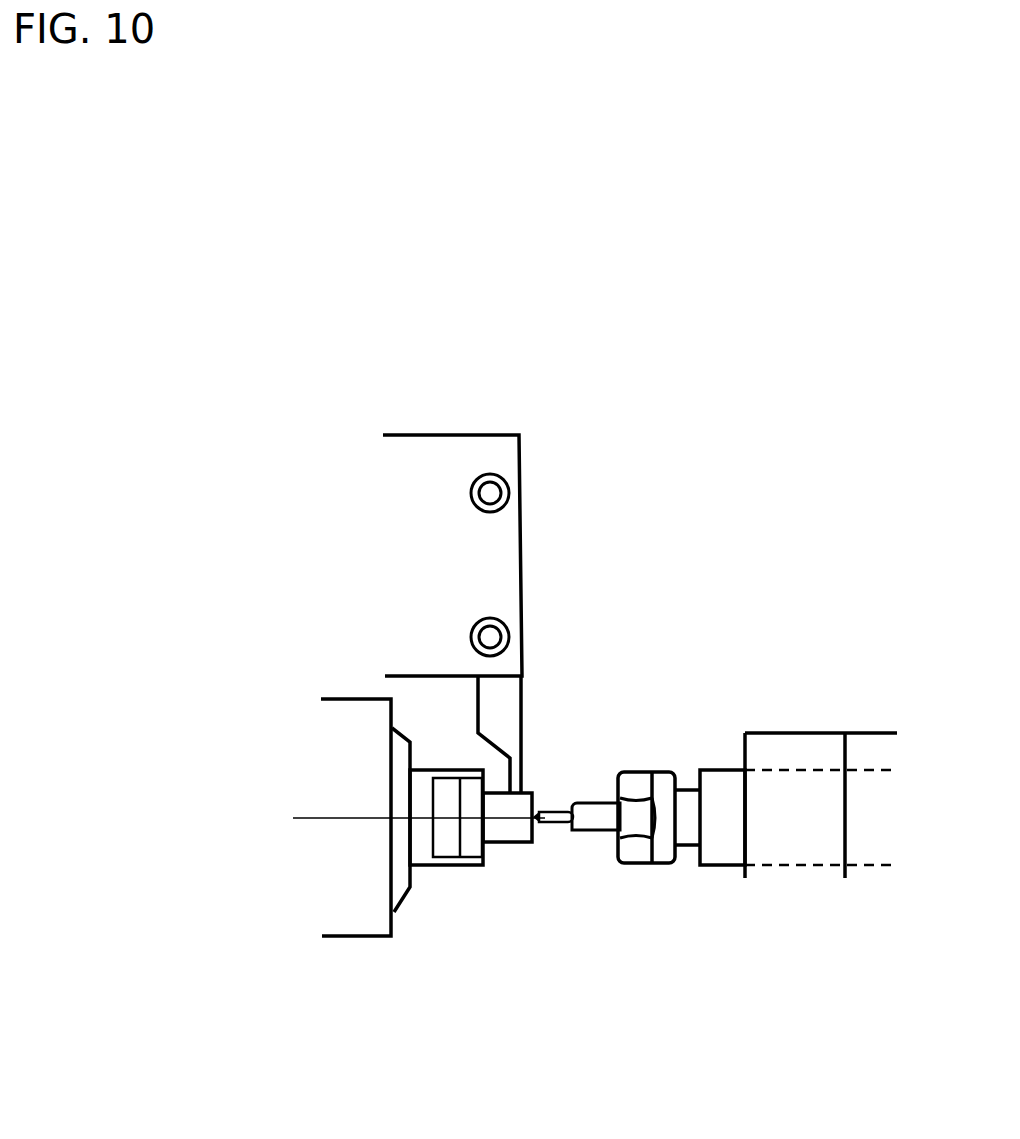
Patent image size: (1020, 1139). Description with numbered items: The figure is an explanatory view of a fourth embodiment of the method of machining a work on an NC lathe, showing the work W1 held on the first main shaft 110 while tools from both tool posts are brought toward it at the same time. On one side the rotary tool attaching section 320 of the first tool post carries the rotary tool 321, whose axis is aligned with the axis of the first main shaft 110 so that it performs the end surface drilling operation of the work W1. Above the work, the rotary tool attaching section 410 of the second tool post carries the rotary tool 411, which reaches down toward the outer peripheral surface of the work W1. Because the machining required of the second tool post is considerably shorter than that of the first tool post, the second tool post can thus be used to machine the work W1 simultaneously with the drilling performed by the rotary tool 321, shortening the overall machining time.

The first main shaft 110 is at (332, 670).
The work W1 is at (457, 890).
The rotary tool attaching section 410 is at (470, 415).
The rotary tool 411 is at (512, 714).
The rotary tool 321 is at (653, 863).
The rotary tool attaching section 320 is at (792, 895).